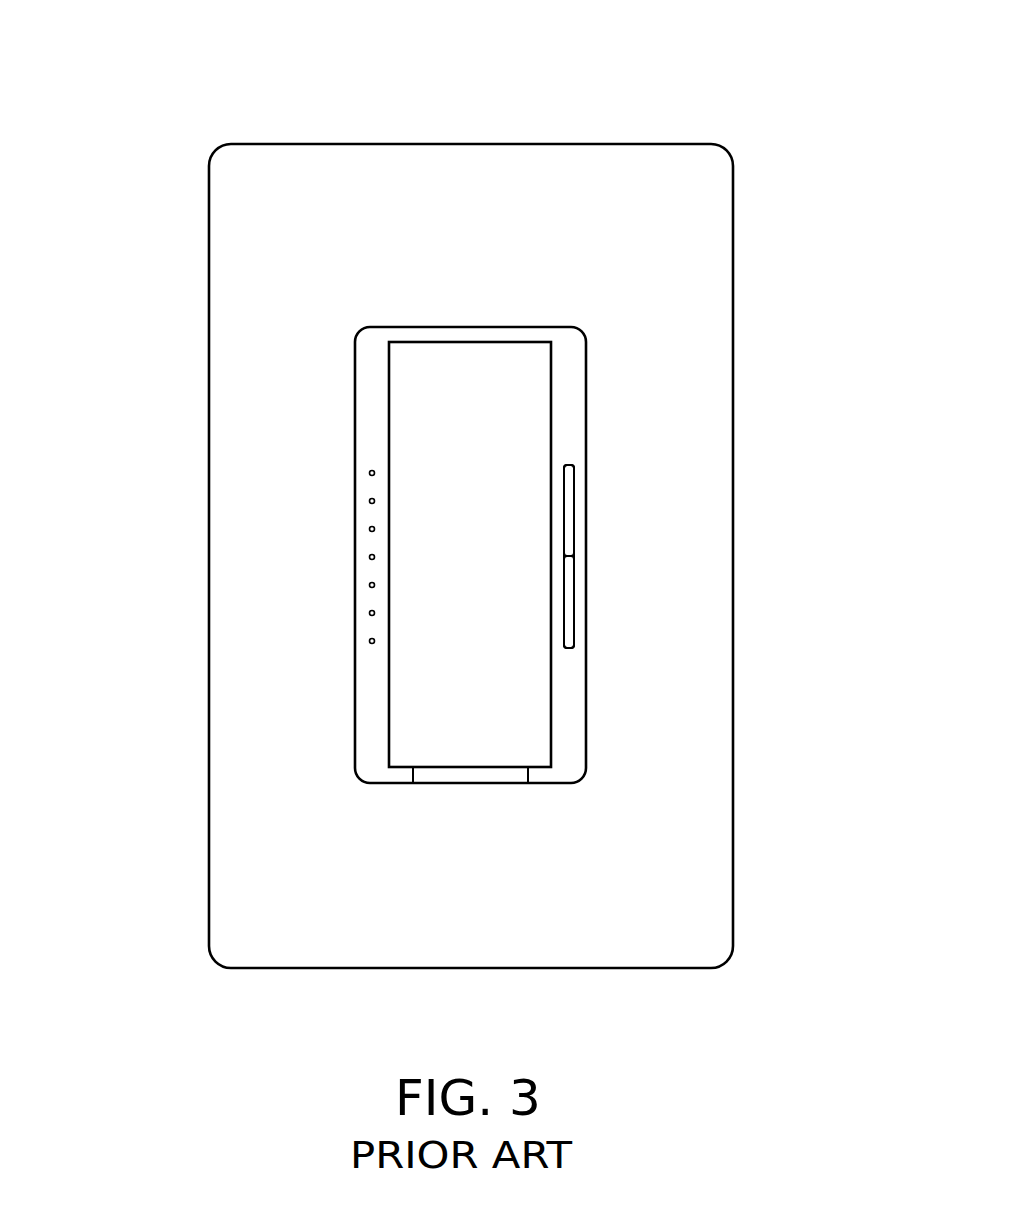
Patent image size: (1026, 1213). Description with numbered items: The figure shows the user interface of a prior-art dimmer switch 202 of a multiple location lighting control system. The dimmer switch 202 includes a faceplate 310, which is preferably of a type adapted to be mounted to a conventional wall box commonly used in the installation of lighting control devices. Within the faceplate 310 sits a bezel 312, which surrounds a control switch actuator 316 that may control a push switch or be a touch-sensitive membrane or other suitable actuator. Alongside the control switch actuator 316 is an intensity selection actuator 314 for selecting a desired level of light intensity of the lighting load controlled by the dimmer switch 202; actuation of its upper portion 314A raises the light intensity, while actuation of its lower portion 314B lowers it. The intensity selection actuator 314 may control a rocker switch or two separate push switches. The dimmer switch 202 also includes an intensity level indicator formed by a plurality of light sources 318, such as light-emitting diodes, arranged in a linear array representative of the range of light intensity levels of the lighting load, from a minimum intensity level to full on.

The dimmer switch 202 is at (158, 100).
The faceplate 310 is at (652, 242).
The bezel 312 is at (570, 384).
The intensity selection actuator 314 is at (577, 548).
The upper portion of actuator 314A is at (571, 484).
The lower portion of actuator 314B is at (571, 606).
The control switch actuator 316 is at (425, 404).
The light sources 318 is at (369, 641).